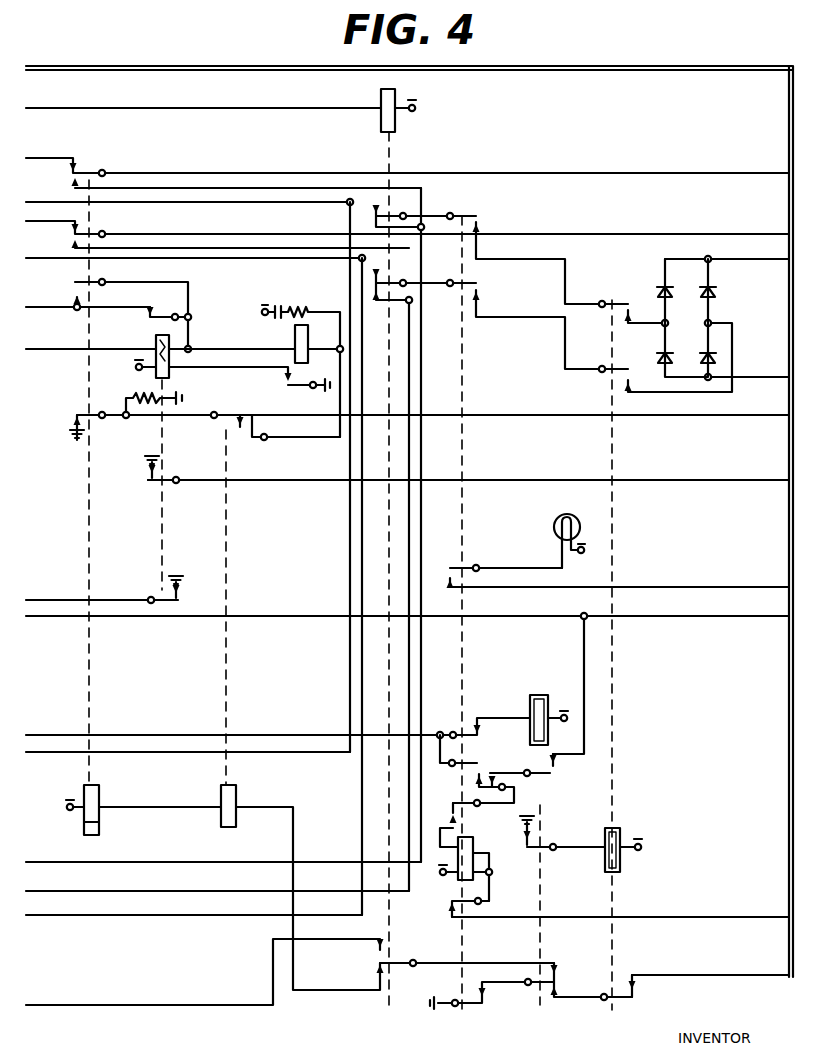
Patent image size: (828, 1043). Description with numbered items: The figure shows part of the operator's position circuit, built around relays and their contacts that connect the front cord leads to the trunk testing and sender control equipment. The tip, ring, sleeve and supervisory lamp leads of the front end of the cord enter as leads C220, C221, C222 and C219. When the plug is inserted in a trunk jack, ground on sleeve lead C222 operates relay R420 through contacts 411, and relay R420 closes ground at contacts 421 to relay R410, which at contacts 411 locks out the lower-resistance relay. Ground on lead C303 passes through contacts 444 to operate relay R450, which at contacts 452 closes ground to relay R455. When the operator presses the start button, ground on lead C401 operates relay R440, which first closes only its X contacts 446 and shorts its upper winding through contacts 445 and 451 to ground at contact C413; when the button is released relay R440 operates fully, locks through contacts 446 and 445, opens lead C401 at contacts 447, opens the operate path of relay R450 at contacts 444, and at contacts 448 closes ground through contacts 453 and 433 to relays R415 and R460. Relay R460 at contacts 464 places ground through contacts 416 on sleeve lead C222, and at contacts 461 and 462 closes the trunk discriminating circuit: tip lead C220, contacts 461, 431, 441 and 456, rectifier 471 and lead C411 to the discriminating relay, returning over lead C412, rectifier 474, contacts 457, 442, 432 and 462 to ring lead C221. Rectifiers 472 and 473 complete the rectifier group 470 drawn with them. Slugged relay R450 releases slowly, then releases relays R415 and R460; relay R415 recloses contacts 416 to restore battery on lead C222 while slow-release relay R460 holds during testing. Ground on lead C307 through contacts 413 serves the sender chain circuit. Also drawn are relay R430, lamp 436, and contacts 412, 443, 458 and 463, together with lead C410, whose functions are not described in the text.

The contacts of relay R460 461 is at (85, 166).
The contacts of relay R460 462 is at (85, 228).
The relay contact 463 is at (85, 292).
The contacts of relay R460 464 is at (92, 419).
The contacts of relay R410 411 is at (146, 312).
The relay contact 412 is at (146, 476).
The contacts 413 is at (181, 600).
The contacts of relay R415 416 is at (229, 419).
The contacts of relay R420 421 is at (286, 382).
The relay R410 is at (155, 342).
The relay R420 is at (294, 340).
The relay R430 is at (396, 125).
The relay R440 is at (484, 836).
The relay R450 is at (554, 685).
The relay R455 is at (617, 828).
The relay R460 is at (92, 785).
The relay R415 is at (229, 785).
The contacts 431 is at (370, 219).
The contacts 432 is at (370, 280).
The contacts 433 is at (366, 963).
The indicator lamp 436 is at (590, 505).
The contacts 441 is at (490, 213).
The contacts 442 is at (490, 283).
The relay contact 443 is at (458, 577).
The contacts of relay R440 444 is at (481, 746).
The contacts of relay R440 445 is at (484, 762).
The X contacts of relay R440 446 is at (458, 818).
The contacts of relay R440 447 is at (447, 901).
The contacts of relay R440 448 is at (494, 994).
The contacts of relay R450 451 is at (555, 770).
The contacts of relay R450 452 is at (540, 836).
The contacts of relay R450 453 is at (565, 975).
The contacts of relay R455 456 is at (620, 311).
The contacts of relay R455 457 is at (620, 380).
The relay contact 458 is at (643, 988).
The diode bridge rectifier 470 is at (695, 318).
The rectifier 471 is at (658, 284).
The diode 472 is at (657, 352).
The diode 473 is at (716, 282).
The rectifier 474 is at (716, 351).
The cord circuit tip lead C220 is at (740, 166).
The cord circuit ring lead C221 is at (740, 227).
The lead C411 is at (738, 259).
The lead C412 is at (785, 377).
The cord circuit sleeve lead C222 is at (738, 415).
The supervisory lamp lead C219 is at (740, 473).
The contact C413 is at (738, 587).
The lead C307 is at (738, 616).
The lead C401 is at (738, 917).
The conductor C410 is at (738, 975).